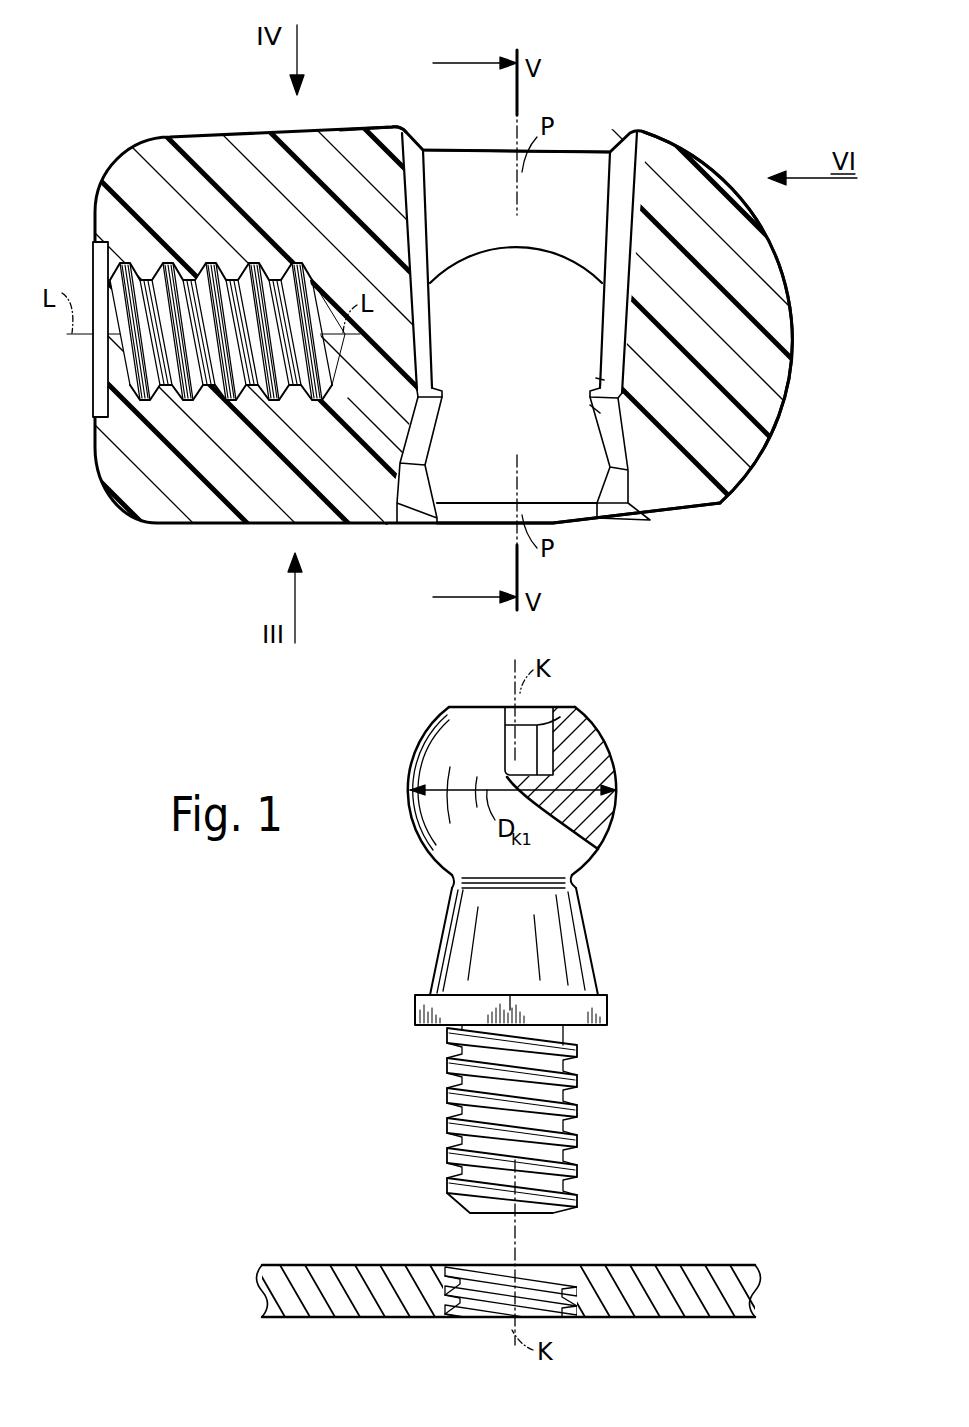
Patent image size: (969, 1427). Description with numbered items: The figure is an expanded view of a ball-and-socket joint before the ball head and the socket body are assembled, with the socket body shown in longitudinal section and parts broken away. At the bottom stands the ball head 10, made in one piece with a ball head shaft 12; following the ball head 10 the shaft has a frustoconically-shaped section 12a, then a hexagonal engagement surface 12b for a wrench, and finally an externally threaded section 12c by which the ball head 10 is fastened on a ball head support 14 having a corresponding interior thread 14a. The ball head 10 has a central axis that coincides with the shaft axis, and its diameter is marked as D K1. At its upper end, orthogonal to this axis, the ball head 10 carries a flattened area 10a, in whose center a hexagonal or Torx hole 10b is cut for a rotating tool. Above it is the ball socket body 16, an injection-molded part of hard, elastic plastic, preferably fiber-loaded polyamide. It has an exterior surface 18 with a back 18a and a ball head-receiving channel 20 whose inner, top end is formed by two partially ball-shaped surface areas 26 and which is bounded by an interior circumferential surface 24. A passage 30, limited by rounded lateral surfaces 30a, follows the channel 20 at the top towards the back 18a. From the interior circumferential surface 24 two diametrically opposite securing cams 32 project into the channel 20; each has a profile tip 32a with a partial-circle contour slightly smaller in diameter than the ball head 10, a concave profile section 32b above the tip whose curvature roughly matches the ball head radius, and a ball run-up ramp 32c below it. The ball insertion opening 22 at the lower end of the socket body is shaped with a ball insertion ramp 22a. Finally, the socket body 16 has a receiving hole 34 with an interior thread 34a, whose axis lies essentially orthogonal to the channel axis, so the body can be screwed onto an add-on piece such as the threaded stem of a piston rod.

The ball head 10 is at (450, 730).
The flattened area 10a is at (556, 705).
The hexagonal hole or Torx hole 10b is at (542, 742).
The ball head shaft 12 is at (457, 933).
The frustoconically-shaped section 12a is at (575, 962).
The hexagonal engagement surface 12b is at (607, 1017).
The externally threaded section 12c is at (573, 1083).
The ball head support 14 is at (353, 1280).
The interior thread 14a is at (558, 1278).
The ball socket body 16 is at (763, 297).
The exterior surface 18 is at (796, 357).
The back 18a is at (352, 127).
The ball head-receiving channel 20 is at (485, 475).
The ball insertion opening 22 is at (567, 513).
The ball insertion ramp 22a is at (405, 513).
The interior circumferential surface 24 is at (572, 300).
The partially ball-shaped surface areas 26 is at (527, 253).
The passage 30 is at (580, 167).
The rounded lateral surfaces 30a is at (414, 210).
The securing cams 32 is at (435, 387).
The profile tip 32a is at (593, 392).
The concave profile section 32b is at (600, 377).
The ball run-up ramp 32c is at (600, 413).
The receiving hole 34 is at (102, 263).
The interior thread 34a is at (140, 360).